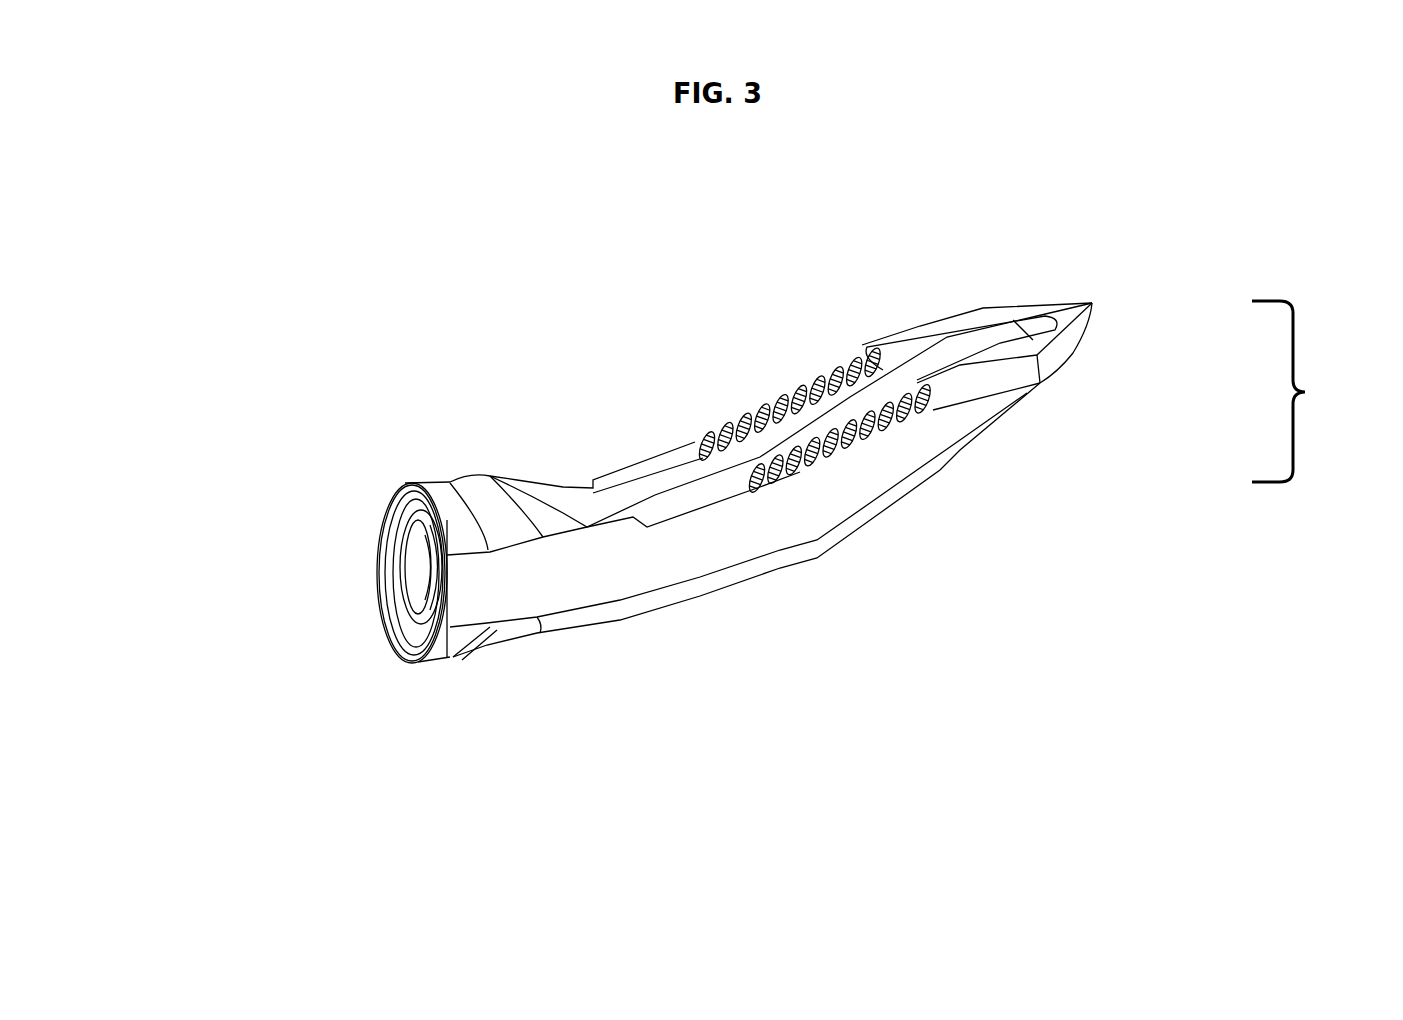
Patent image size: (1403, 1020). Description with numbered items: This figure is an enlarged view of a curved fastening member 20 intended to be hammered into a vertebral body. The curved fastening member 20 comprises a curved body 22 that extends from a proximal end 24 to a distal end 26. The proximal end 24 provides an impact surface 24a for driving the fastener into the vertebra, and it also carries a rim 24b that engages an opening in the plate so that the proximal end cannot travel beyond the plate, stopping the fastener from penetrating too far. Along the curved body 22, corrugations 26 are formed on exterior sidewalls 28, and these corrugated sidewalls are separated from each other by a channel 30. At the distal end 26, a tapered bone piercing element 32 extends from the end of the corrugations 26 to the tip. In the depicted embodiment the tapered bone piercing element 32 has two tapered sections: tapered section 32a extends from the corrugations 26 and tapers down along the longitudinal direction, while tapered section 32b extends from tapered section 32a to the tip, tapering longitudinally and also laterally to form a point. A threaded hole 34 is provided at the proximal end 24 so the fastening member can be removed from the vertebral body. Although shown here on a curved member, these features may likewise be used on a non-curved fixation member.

The curved fastening member 20 is at (757, 206).
The curved body 22 is at (656, 562).
The proximal end 24 is at (407, 673).
The impact surface 24a is at (383, 500).
The rim 24b is at (413, 483).
The corrugations 26 is at (777, 416).
The exterior sidewalls 28 is at (848, 465).
The channel 30 is at (655, 498).
The tapered bone piercing element 32 is at (1305, 392).
The tapered section 32a is at (1067, 347).
The tapered section 32b is at (978, 363).
The threaded hole 34 is at (405, 585).